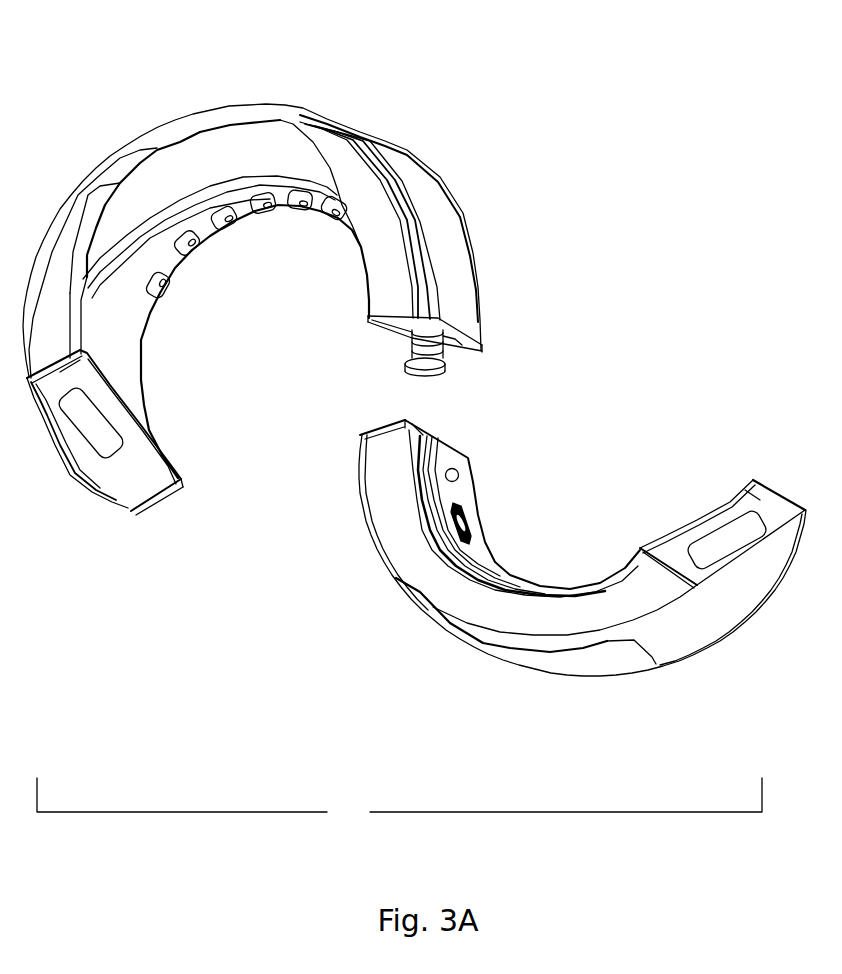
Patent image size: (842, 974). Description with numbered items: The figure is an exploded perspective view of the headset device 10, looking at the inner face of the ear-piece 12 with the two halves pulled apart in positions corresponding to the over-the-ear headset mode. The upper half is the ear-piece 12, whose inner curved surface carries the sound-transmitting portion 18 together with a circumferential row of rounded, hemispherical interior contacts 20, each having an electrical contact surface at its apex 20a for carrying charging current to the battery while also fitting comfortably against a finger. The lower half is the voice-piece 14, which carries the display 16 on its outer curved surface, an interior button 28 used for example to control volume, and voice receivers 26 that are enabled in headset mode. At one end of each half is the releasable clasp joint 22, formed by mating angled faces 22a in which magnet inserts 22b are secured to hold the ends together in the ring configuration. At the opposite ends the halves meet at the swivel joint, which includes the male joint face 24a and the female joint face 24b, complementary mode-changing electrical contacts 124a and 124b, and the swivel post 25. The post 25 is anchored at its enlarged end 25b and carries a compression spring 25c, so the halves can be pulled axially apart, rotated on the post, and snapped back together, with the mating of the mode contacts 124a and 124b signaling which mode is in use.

The headset device 10 is at (399, 802).
The ear-piece 12 is at (317, 251).
The voice-piece 14 is at (530, 577).
The display 16 is at (594, 668).
The sound-transmitting portion 18 is at (215, 150).
The interior contacts 20 is at (268, 212).
The apex 20a is at (200, 297).
The releasable joint 22 is at (416, 468).
The angled faces 22a is at (127, 472).
The magnet inserts 22b is at (85, 424).
The male joint face 24a is at (423, 436).
The female joint face 24b is at (408, 322).
The swivel post 25 is at (508, 329).
The enlarged end 25b is at (447, 370).
The compression spring 25c is at (458, 340).
The voice receivers 26 is at (459, 474).
The interior button 28 is at (468, 523).
The male mode contact 124a is at (405, 423).
The female mode contact 124b is at (446, 328).